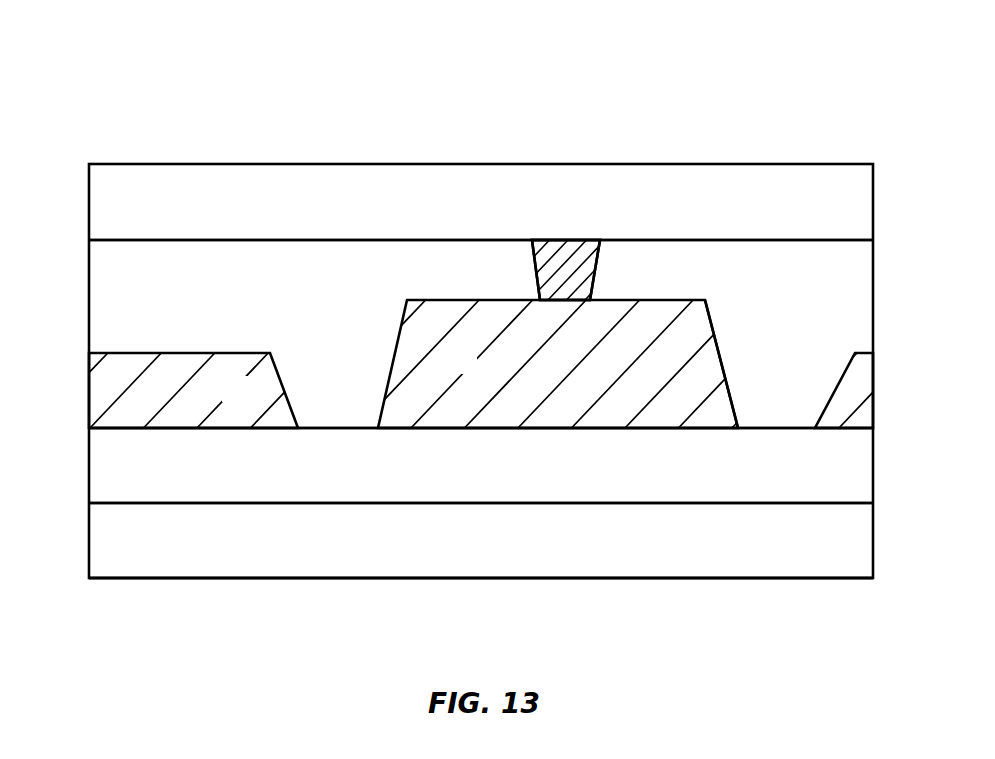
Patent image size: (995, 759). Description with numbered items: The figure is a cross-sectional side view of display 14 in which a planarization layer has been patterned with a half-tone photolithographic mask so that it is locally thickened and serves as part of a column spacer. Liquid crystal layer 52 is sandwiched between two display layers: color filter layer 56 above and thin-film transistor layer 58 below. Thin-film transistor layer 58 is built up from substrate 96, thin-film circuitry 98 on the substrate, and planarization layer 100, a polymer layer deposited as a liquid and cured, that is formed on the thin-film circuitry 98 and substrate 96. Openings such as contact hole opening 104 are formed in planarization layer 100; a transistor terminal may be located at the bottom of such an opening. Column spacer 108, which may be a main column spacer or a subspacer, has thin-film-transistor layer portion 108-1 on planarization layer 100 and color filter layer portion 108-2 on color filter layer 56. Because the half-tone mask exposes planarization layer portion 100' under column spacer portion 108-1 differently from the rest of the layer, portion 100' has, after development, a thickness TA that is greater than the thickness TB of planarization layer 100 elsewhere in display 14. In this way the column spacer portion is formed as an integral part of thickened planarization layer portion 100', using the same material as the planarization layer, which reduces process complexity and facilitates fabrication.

The display 14 is at (725, 89).
The color filter layer 56 is at (100, 202).
The liquid crystal layer 52 is at (100, 295).
The thin-film transistor layer 58 is at (68, 355).
The substrate 96 is at (323, 550).
The thin-film circuitry 98 is at (217, 480).
The planarization layer 100 is at (481, 362).
The planarization layer portion 100' is at (538, 364).
The contact hole opening 104 is at (323, 360).
The column spacer 108 is at (441, 275).
The thin-film-transistor layer portion 108-1 is at (700, 325).
The color filter layer portion 108-2 is at (598, 263).
The thickness TA is at (460, 306).
The thickness TB is at (238, 359).